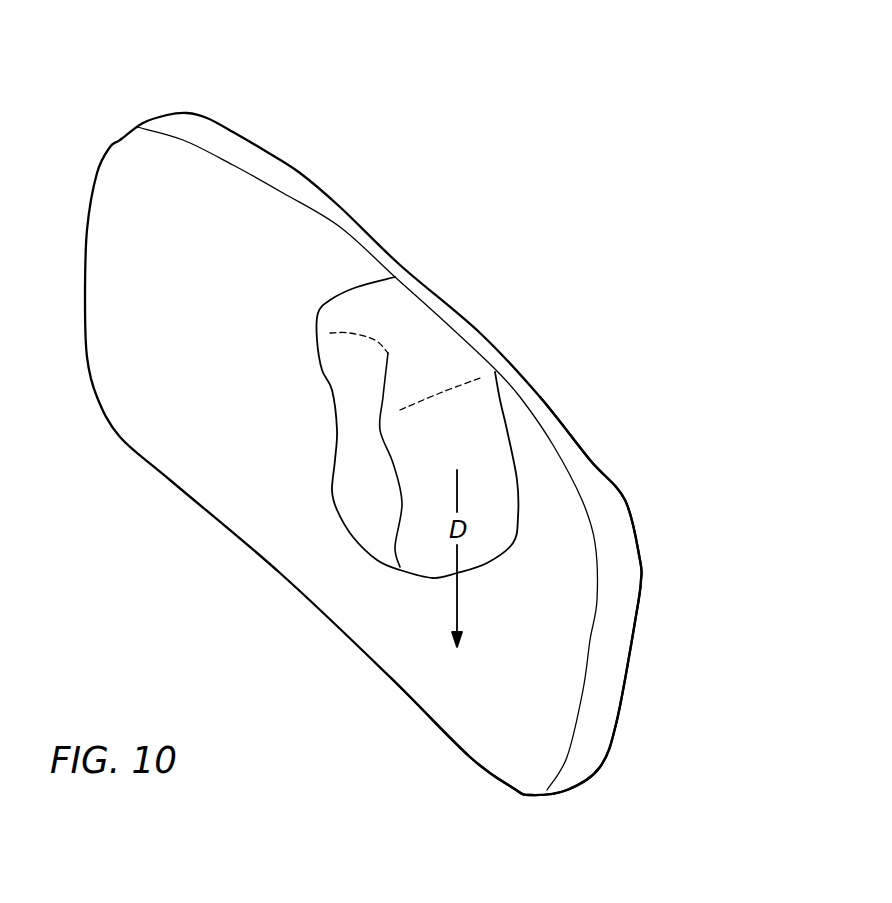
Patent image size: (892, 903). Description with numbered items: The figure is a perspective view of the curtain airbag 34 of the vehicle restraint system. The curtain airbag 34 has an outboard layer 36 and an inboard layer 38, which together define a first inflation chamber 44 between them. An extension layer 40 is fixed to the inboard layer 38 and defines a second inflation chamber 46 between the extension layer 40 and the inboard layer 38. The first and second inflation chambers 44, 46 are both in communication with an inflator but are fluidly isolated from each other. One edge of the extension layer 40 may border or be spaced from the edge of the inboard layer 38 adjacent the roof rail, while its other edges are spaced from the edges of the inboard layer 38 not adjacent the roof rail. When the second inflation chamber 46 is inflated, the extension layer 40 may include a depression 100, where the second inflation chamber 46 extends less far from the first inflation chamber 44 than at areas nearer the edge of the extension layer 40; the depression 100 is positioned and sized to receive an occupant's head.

The curtain airbag 34 is at (125, 93).
The outboard layer 36 is at (641, 560).
The inboard layer 38 is at (493, 740).
The extension layer 40 is at (507, 430).
The first inflation chamber 44 is at (563, 620).
The second inflation chamber 46 is at (467, 420).
The depression 100 is at (397, 468).